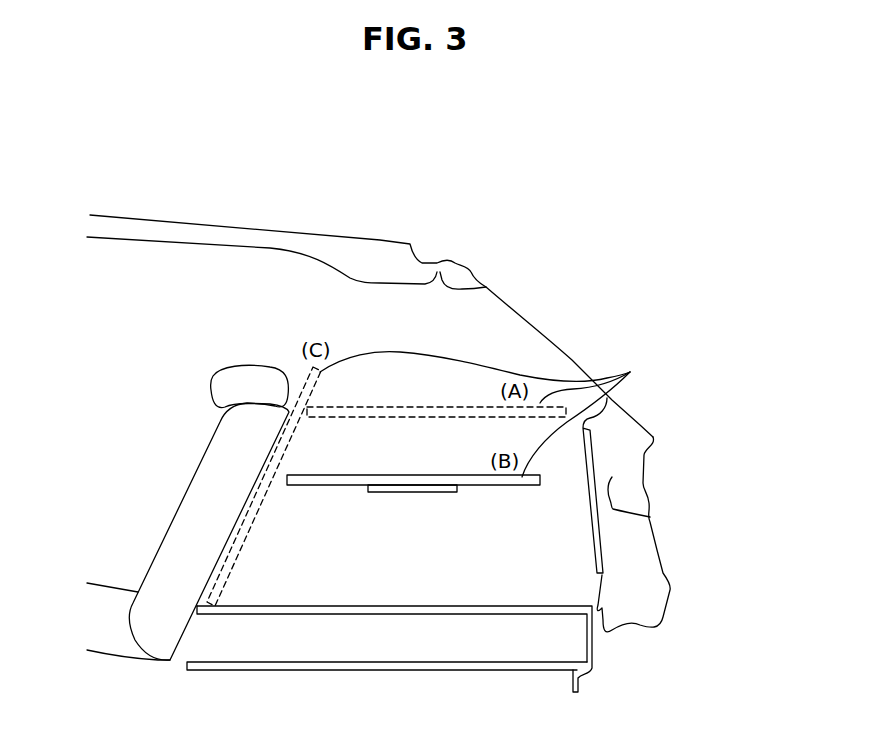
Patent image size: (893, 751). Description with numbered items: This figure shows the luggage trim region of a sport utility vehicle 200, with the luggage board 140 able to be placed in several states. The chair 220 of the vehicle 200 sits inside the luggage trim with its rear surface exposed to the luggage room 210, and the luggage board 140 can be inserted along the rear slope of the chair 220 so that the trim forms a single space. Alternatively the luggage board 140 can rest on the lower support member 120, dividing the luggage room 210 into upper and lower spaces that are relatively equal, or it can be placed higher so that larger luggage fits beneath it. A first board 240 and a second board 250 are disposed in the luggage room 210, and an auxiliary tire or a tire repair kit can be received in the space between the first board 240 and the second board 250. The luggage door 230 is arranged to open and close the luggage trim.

The sport utility vehicle 200 is at (310, 216).
The luggage board 140 is at (493, 410).
The luggage door 230 is at (633, 445).
The lower support member 120 is at (437, 489).
The chair 220 is at (203, 488).
The luggage room 210 is at (310, 562).
The first board 240 is at (425, 667).
The second board 250 is at (503, 611).